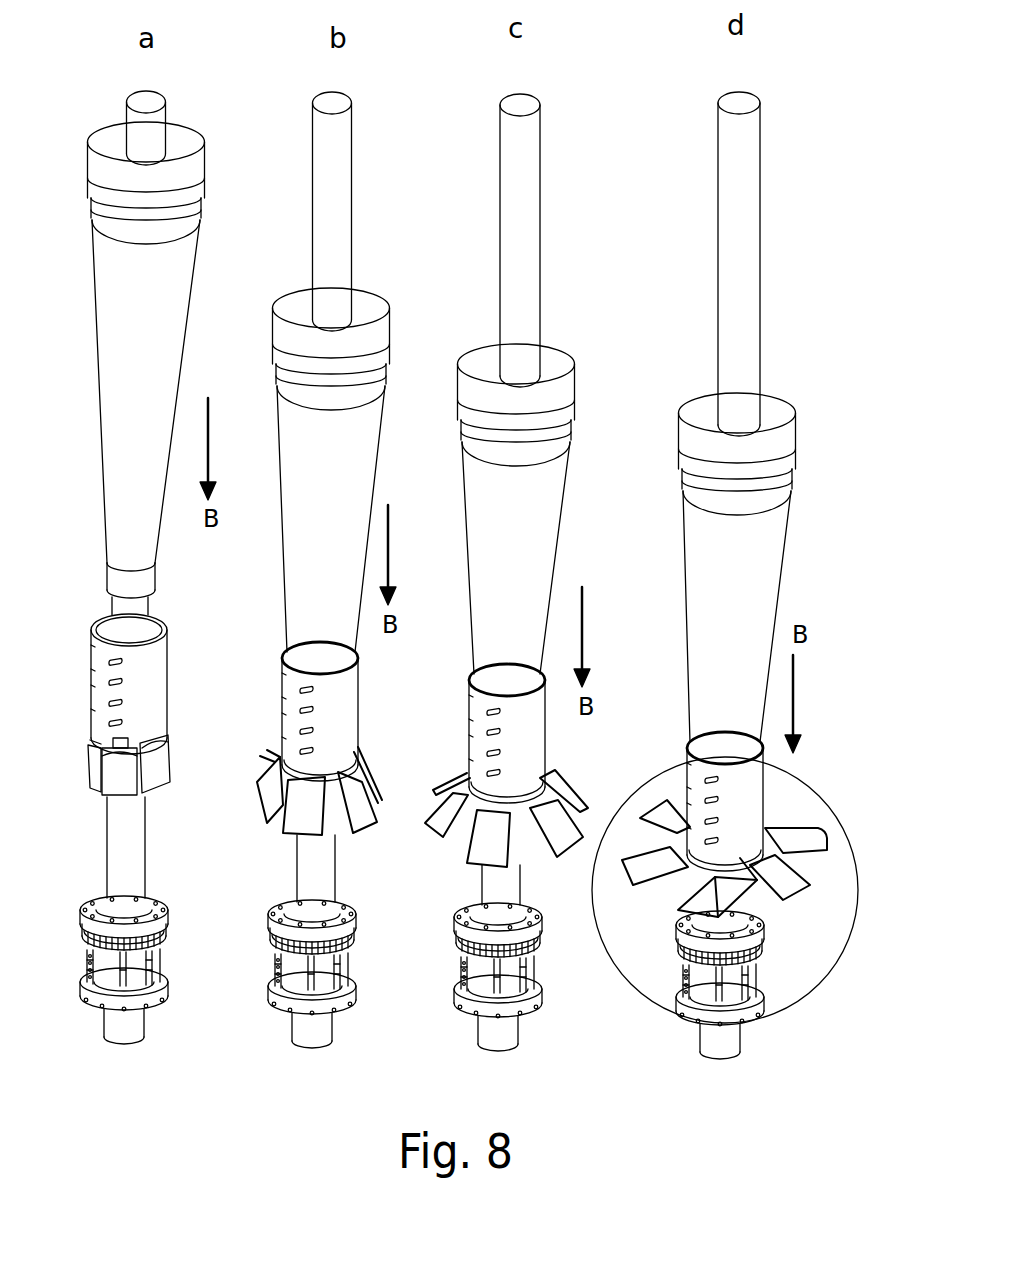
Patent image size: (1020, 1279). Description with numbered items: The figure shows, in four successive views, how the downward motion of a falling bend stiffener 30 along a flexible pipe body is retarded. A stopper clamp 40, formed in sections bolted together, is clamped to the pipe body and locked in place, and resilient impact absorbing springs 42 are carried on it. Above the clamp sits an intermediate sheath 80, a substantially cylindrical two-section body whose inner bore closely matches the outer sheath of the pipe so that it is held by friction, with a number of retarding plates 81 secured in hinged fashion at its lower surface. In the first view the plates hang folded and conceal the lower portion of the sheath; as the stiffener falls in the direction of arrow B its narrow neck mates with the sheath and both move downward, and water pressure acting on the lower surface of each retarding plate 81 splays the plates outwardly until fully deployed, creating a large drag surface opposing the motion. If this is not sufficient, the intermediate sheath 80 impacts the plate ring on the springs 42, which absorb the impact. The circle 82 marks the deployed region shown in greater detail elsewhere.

The bend stiffener 30 is at (165, 303).
The intermediate sheath 80 is at (153, 673).
The retarding plate 81 is at (157, 777).
The resilient impact absorbing springs 42 is at (166, 922).
The stopper clamp 40 is at (168, 990).
The circle 82 is at (668, 766).